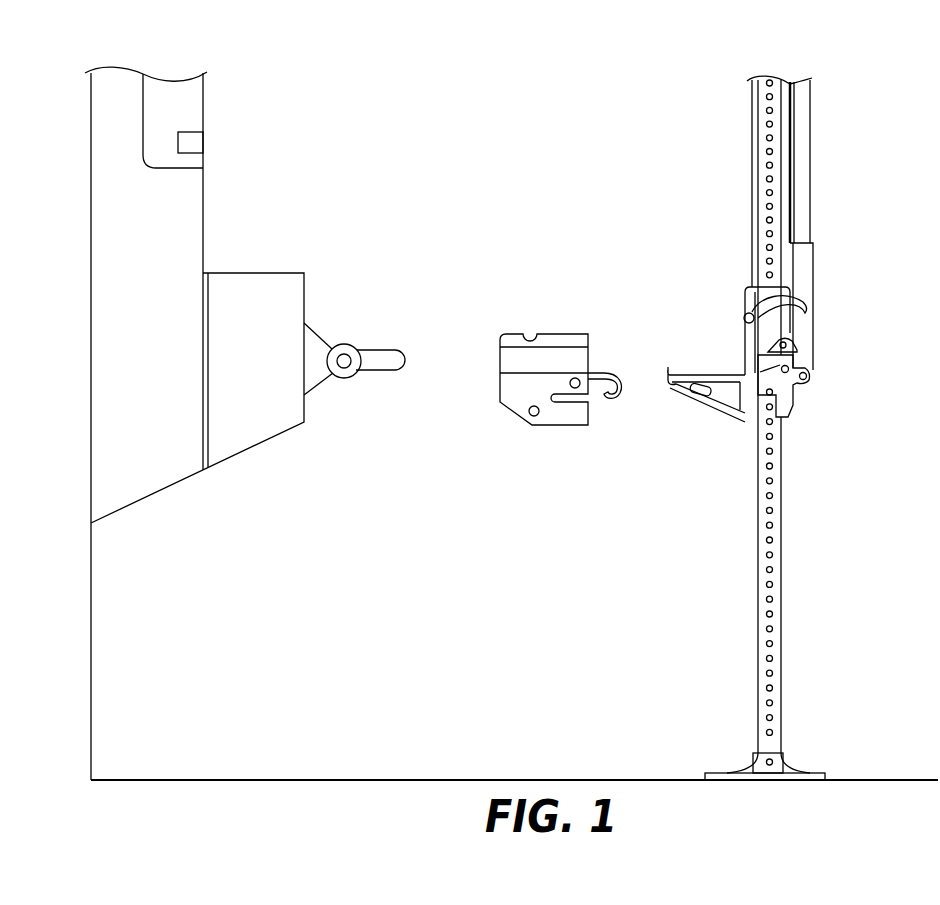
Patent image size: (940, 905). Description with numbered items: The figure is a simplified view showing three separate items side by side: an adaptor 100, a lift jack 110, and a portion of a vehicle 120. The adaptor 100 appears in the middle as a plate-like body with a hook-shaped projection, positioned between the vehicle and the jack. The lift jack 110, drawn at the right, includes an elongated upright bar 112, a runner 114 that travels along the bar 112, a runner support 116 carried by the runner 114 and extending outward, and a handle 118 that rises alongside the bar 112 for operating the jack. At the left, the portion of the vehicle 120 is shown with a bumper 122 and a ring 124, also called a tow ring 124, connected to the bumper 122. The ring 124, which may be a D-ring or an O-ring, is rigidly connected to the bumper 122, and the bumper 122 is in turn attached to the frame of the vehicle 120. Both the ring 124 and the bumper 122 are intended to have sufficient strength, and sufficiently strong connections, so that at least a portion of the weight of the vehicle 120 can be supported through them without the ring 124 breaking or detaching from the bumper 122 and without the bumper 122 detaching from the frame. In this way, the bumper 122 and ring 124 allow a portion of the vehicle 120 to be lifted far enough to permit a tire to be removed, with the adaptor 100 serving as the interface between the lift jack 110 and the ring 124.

The adaptor 100 is at (523, 298).
The lift jack 110 is at (848, 78).
The bar 112 is at (781, 612).
The runner 114 is at (795, 400).
The runner support 116 is at (712, 410).
The handle 118 is at (806, 175).
The vehicle 120 is at (228, 118).
The bumper 122 is at (225, 457).
The ring 124 is at (363, 376).